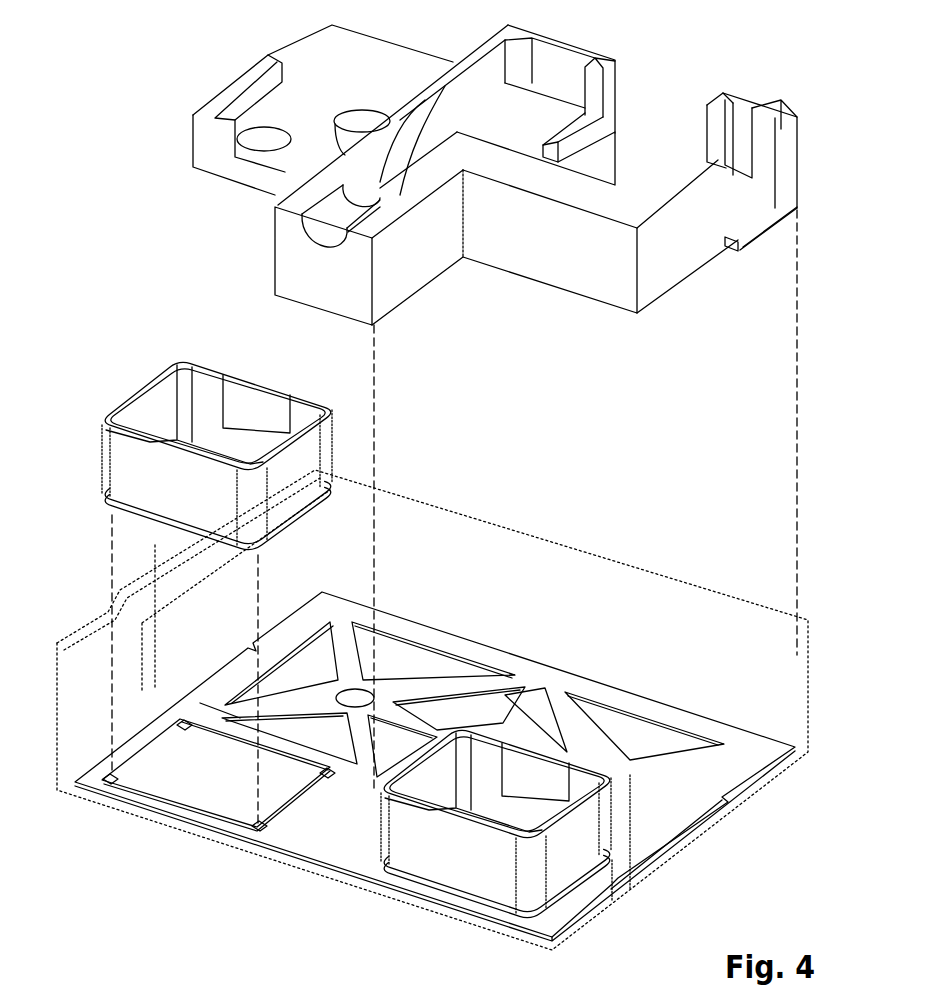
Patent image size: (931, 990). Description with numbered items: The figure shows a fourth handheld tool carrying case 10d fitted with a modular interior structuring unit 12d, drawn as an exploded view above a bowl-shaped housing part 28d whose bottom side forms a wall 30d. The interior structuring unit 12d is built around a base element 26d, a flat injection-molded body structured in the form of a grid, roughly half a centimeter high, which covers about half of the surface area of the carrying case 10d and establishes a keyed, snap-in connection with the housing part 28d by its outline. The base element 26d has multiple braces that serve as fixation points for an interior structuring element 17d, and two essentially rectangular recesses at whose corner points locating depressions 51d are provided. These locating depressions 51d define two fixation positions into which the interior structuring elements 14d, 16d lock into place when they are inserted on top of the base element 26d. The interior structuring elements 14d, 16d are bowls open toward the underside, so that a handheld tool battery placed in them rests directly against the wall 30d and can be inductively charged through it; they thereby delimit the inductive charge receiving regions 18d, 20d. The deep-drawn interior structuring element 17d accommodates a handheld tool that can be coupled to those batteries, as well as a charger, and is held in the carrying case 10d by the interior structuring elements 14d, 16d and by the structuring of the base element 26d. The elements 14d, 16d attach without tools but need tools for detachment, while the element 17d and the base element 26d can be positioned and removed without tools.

The handheld tool carrying case 10d is at (603, 517).
The interior structuring unit 12d is at (738, 573).
The interior structuring element 14d is at (256, 373).
The interior structuring element 16d is at (442, 720).
The interior structuring element 17d is at (688, 255).
The inductive charge receiving region 18d is at (217, 431).
The inductive charge receiving region 20d is at (552, 768).
The base element 26d is at (503, 655).
The housing part 28d is at (633, 605).
The wall 30d is at (218, 811).
The locating depressions 51d is at (180, 731).